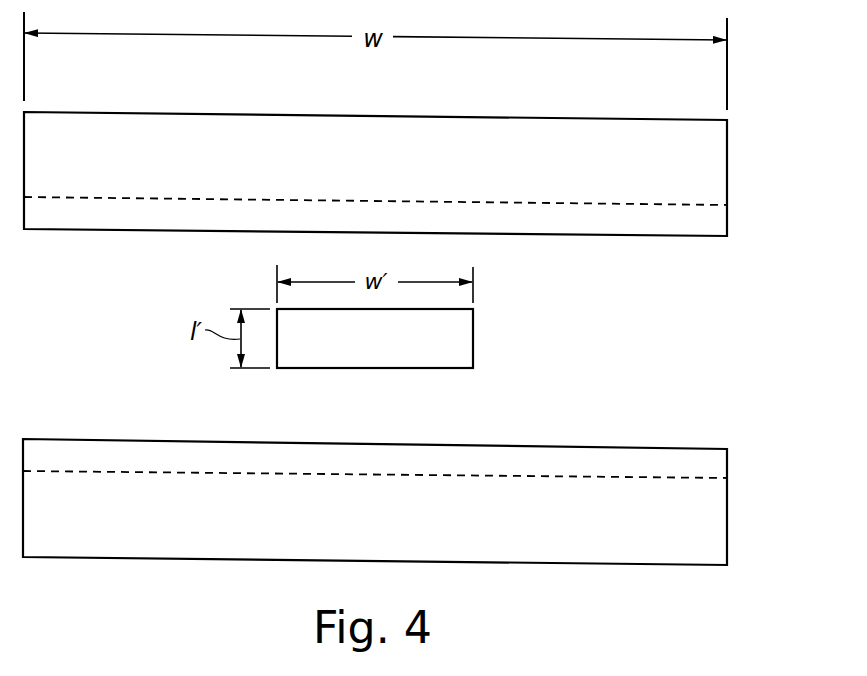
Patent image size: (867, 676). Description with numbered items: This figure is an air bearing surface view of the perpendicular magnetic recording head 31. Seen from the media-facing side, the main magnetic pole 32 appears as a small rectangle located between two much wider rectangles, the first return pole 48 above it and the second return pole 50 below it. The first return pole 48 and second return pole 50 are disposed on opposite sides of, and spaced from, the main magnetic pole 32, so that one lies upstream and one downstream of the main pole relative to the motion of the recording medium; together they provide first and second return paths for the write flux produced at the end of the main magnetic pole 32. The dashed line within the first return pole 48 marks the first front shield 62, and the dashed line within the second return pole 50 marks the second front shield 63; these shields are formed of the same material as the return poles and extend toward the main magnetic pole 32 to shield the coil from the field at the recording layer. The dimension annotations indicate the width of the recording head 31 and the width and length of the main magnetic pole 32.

The perpendicular magnetic recording head 31 is at (423, 159).
The first return pole 48 is at (594, 175).
The first front shield 62 is at (703, 228).
The main magnetic pole 32 is at (431, 353).
The second return pole 50 is at (594, 536).
The second front shield 63 is at (703, 455).